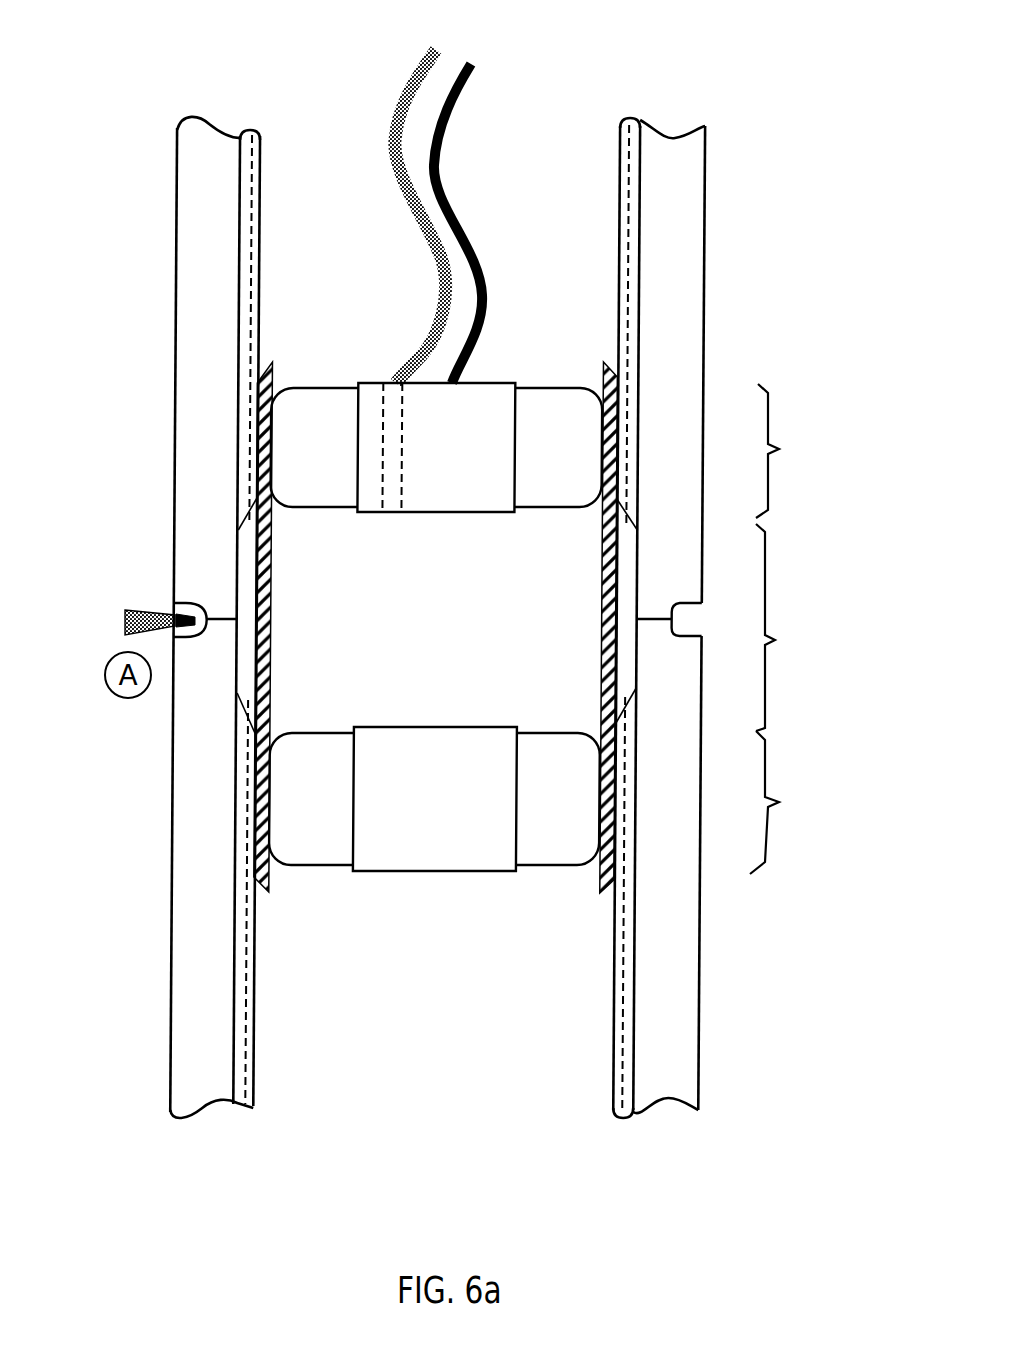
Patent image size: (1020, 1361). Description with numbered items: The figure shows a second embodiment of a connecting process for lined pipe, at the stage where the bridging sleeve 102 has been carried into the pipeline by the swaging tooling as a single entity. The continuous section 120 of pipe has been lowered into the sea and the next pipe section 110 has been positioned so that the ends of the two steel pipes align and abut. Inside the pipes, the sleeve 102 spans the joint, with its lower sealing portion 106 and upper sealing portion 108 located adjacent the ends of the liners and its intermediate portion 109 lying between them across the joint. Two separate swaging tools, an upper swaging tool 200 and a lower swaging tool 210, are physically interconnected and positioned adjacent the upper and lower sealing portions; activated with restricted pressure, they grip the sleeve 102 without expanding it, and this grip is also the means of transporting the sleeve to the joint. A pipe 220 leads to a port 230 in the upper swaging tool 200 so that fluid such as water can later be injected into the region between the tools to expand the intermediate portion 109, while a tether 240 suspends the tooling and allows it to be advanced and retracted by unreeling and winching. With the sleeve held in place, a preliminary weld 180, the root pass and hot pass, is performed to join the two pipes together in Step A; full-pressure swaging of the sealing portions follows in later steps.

The sleeve 102 is at (436, 627).
The lower sealing portion 106 is at (828, 802).
The upper sealing portion 108 is at (831, 451).
The intermediate portion 109 is at (831, 627).
The next pipe section 110 is at (719, 614).
The continuous section of pipe 120 is at (716, 877).
The preliminary weld 180 is at (117, 607).
The upper swaging tool 200 is at (436, 416).
The lower swaging tool 210 is at (434, 824).
The pipe 220 is at (370, 216).
The port 230 is at (436, 484).
The tether 240 is at (513, 223).